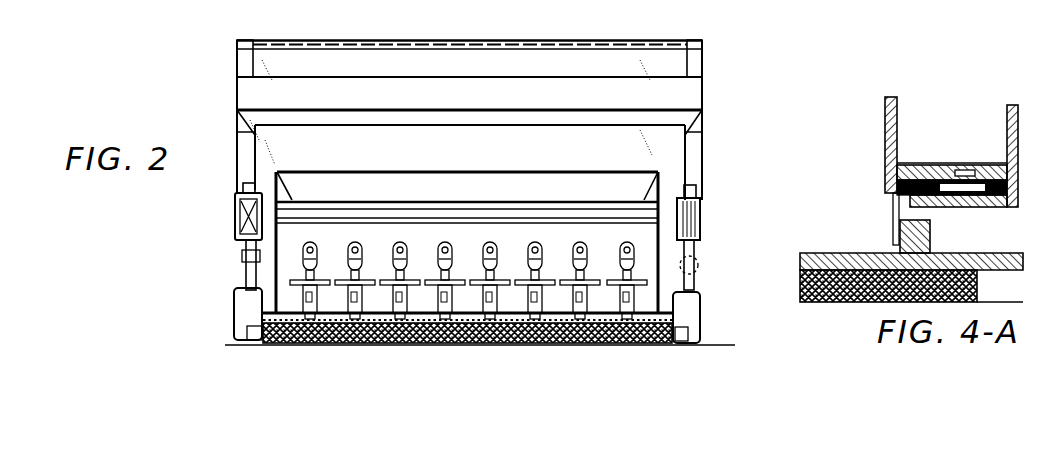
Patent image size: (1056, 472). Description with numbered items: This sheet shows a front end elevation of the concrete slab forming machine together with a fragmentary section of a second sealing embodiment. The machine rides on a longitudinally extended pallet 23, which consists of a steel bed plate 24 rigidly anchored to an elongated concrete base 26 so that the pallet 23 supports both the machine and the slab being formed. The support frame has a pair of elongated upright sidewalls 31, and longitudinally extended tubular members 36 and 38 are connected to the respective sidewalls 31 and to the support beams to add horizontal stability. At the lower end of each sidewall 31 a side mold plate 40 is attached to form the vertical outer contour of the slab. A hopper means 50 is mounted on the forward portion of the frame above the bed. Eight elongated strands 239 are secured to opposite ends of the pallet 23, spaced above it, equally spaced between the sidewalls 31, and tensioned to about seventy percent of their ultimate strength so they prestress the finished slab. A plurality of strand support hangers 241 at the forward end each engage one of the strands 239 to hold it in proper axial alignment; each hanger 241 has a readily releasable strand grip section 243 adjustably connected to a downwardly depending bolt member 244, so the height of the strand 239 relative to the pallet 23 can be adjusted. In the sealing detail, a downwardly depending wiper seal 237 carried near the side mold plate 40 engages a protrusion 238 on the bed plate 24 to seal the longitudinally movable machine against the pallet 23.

In FIG. 2, the hopper means 50 is at (704, 74).
In FIG. 2, the strand support hanger 241 is at (316, 259).
In FIG. 2, the strand 239 is at (352, 300).
In FIG. 2, the bolt member 244 is at (457, 283).
In FIG. 2, the strand grip section 243 is at (497, 264).
In FIG. 2, the tubular member 36 is at (702, 225).
In FIG. 2, the tubular member 38 is at (237, 229).
In FIG. 2, the side mold plate 40 is at (242, 301).
In FIG. 4-A, the side mold plate 40 is at (898, 125).
In FIG. 2, the sidewall 31 is at (690, 288).
In FIG. 4-A, the sidewall 31 is at (1015, 122).
In FIG. 2, the pallet 23 is at (318, 351).
In FIG. 2, the concrete base 26 is at (487, 348).
In FIG. 4-A, the concrete base 26 is at (848, 303).
In FIG. 2, the bed plate 24 is at (653, 341).
In FIG. 4-A, the bed plate 24 is at (993, 254).
In FIG. 4-A, the wiper seal 237 is at (920, 164).
In FIG. 4-A, the protrusion 238 is at (931, 242).